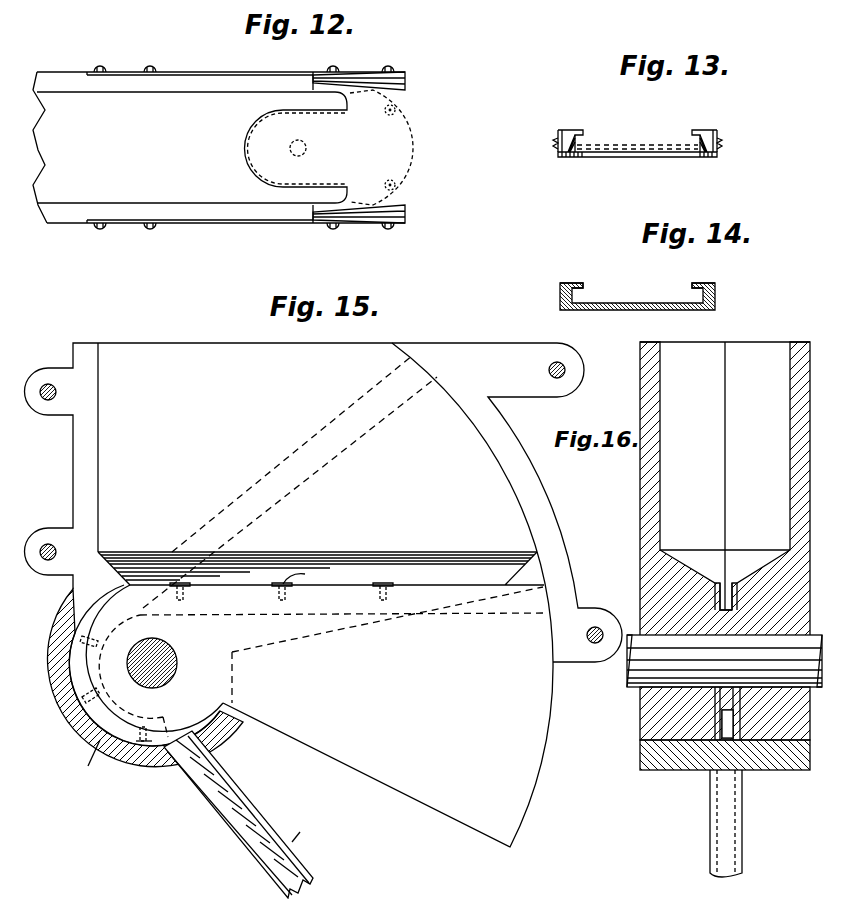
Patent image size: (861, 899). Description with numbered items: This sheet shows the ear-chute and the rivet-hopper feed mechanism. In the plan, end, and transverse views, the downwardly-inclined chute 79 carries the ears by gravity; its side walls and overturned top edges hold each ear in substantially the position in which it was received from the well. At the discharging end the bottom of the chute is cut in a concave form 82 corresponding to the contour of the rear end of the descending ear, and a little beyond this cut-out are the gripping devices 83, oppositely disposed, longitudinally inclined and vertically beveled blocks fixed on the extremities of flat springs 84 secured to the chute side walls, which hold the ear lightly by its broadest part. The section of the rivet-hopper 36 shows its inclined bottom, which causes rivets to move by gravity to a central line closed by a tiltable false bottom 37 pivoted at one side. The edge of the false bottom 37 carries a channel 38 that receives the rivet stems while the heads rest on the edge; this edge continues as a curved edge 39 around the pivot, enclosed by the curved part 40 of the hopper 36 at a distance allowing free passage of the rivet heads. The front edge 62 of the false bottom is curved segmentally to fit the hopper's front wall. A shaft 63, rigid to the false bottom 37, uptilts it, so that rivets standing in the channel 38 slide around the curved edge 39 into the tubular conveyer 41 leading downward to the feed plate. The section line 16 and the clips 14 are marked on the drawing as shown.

In FIG. 12, the fastening clips 14 is at (202, 67).
In FIG. 12, the flat springs 84 is at (297, 41).
In FIG. 13, the flat springs 84 is at (560, 132).
In FIG. 14, the flat springs 84 is at (560, 288).
In FIG. 12, the gripping devices 83 is at (405, 73).
In FIG. 13, the gripping devices 83 is at (570, 147).
In FIG. 12, the chute 79 is at (219, 147).
In FIG. 13, the chute 79 is at (585, 160).
In FIG. 14, the chute 79 is at (634, 302).
In FIG. 12, the concave cut 82 is at (257, 146).
In FIG. 13, the concave cut 82 is at (642, 155).
In FIG. 15, the frame 16 is at (152, 340).
In FIG. 15, the hopper 36 is at (317, 459).
In FIG. 16, the hopper 36 is at (725, 489).
In FIG. 15, the false bottom 37 is at (278, 460).
In FIG. 16, the false bottom 37 is at (718, 695).
In FIG. 15, the channel 38 is at (425, 598).
In FIG. 16, the channel 38 is at (727, 597).
In FIG. 15, the shaft 63 is at (172, 665).
In FIG. 16, the shaft 63 is at (724, 661).
In FIG. 15, the curved edge 39 is at (80, 690).
In FIG. 15, the curved part 40 is at (80, 736).
In FIG. 16, the curved part 40 is at (772, 767).
In FIG. 15, the tubular conveyer 41 is at (232, 834).
In FIG. 16, the tubular conveyer 41 is at (742, 833).
In FIG. 15, the front edge 62 is at (545, 757).